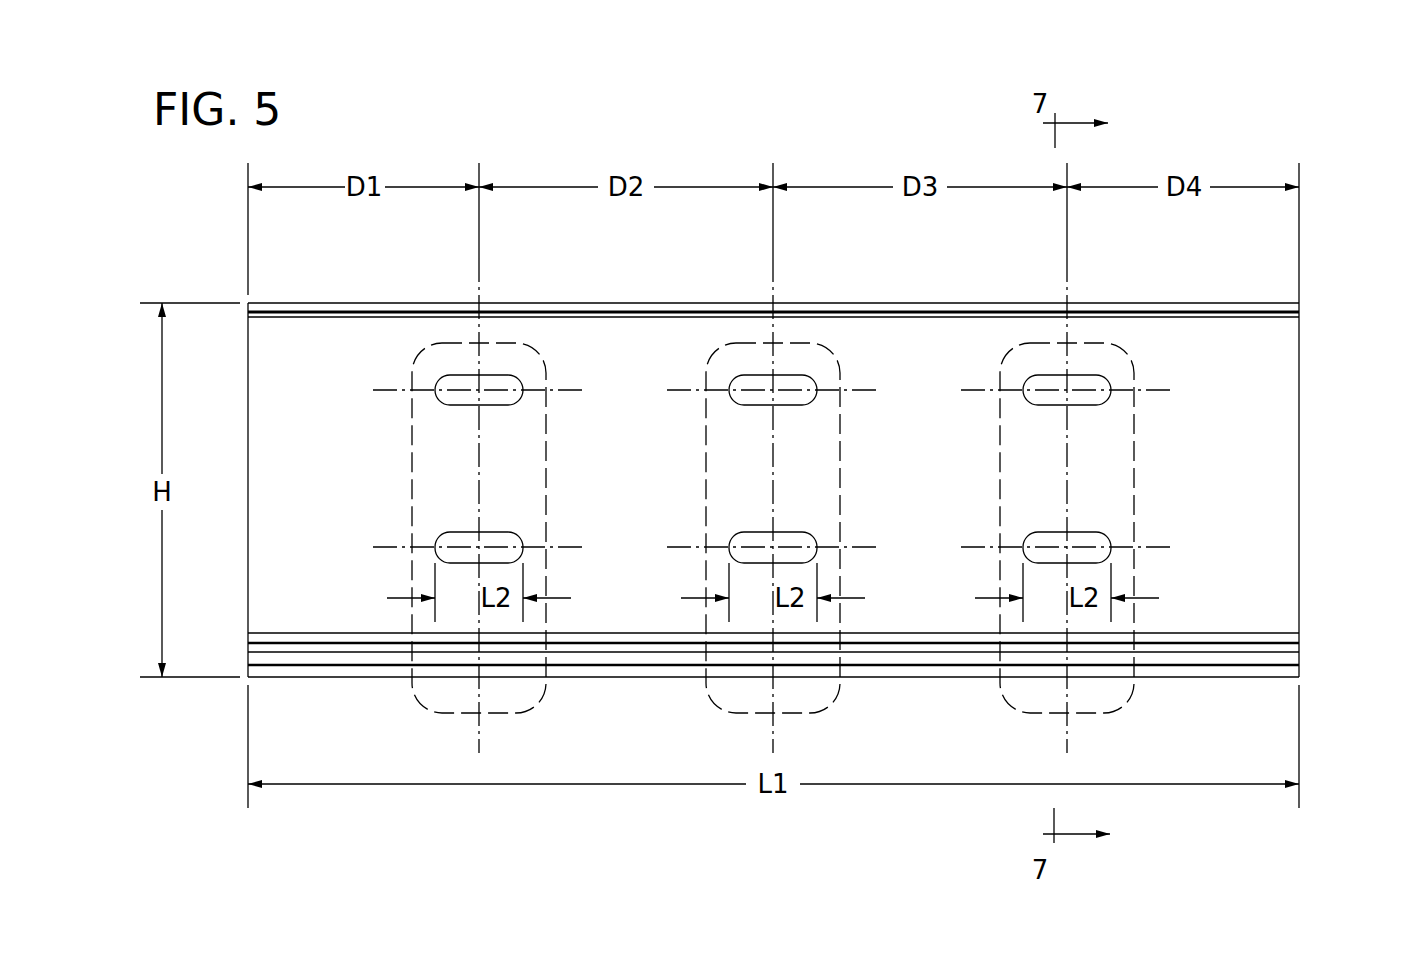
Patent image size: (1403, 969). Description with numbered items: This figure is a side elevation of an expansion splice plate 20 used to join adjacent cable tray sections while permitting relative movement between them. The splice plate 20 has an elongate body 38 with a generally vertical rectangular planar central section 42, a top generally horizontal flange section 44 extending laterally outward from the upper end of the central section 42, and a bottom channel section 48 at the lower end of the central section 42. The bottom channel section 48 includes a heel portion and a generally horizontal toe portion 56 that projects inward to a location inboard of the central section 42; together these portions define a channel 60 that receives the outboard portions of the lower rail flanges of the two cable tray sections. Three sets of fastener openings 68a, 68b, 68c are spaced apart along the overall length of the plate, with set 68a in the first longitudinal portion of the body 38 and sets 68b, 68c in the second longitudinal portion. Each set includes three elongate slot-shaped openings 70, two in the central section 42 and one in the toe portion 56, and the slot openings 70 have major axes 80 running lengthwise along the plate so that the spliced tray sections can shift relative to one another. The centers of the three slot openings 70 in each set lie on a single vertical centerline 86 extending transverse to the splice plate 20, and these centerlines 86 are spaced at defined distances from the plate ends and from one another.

The expansion splice plate 20 is at (1303, 390).
The elongate body 38 is at (275, 512).
The central section 42 is at (300, 408).
The top flange section 44 is at (364, 302).
The bottom channel section 48 is at (309, 678).
The toe portion 56 is at (1290, 670).
The channel 60 is at (1280, 657).
The first set of openings 68a is at (548, 406).
The second set of openings 68b is at (842, 406).
The third set of openings 68c is at (1136, 406).
The slot-shaped openings 70 is at (455, 406).
The major axes 80 is at (380, 391).
The vertical centerline 86 is at (478, 482).